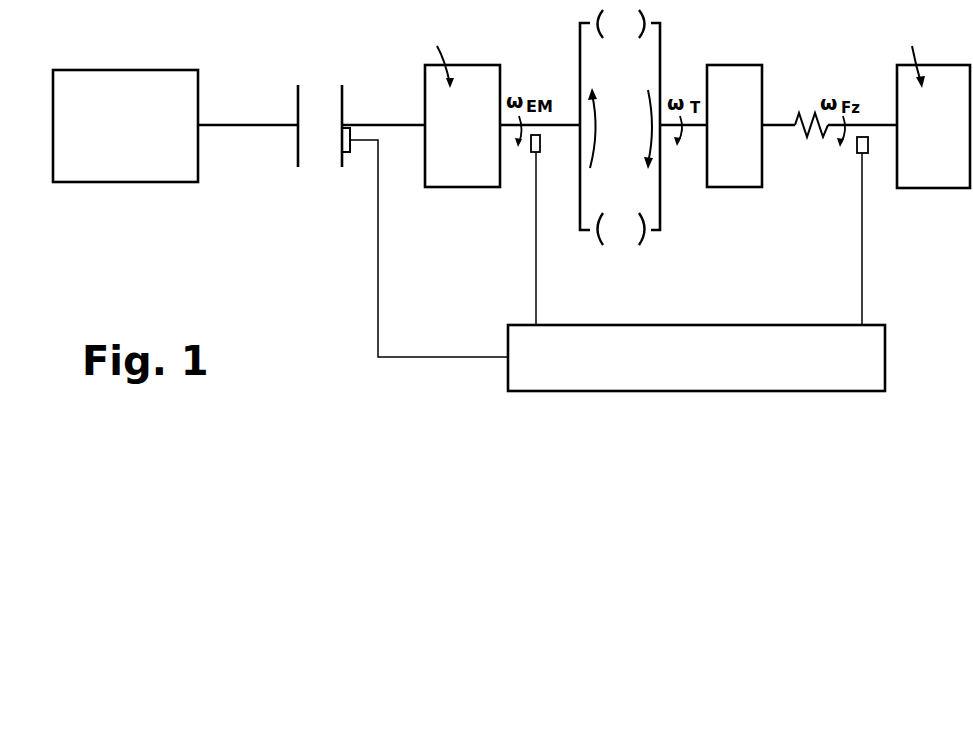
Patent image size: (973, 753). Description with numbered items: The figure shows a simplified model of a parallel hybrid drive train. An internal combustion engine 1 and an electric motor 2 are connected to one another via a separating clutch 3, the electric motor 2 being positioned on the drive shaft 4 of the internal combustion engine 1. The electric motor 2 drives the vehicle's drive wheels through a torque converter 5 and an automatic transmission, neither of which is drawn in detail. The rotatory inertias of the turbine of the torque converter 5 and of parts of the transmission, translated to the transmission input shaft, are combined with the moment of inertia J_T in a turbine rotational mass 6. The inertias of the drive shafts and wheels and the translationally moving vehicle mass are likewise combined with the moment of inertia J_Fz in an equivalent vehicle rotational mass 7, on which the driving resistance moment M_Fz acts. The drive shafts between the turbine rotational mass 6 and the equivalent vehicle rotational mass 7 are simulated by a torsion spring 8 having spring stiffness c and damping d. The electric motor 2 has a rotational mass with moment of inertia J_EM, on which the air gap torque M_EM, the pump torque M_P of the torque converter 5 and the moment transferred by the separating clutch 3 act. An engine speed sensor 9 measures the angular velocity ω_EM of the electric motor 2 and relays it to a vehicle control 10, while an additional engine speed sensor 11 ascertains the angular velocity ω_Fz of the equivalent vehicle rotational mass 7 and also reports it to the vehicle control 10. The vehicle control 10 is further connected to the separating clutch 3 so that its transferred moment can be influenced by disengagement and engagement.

The internal combustion engine 1 is at (110, 182).
The electric motor 2 is at (447, 187).
The separating clutch 3 is at (320, 160).
The drive shaft 4 is at (240, 125).
The torque converter 5 is at (660, 230).
The turbine rotational mass 6 is at (730, 187).
The equivalent vehicle rotational mass 7 is at (932, 188).
The torsion spring 8 is at (810, 137).
The engine speed sensor 9 is at (540, 152).
The vehicle control 10 is at (663, 391).
The engine speed sensor 11 is at (866, 153).